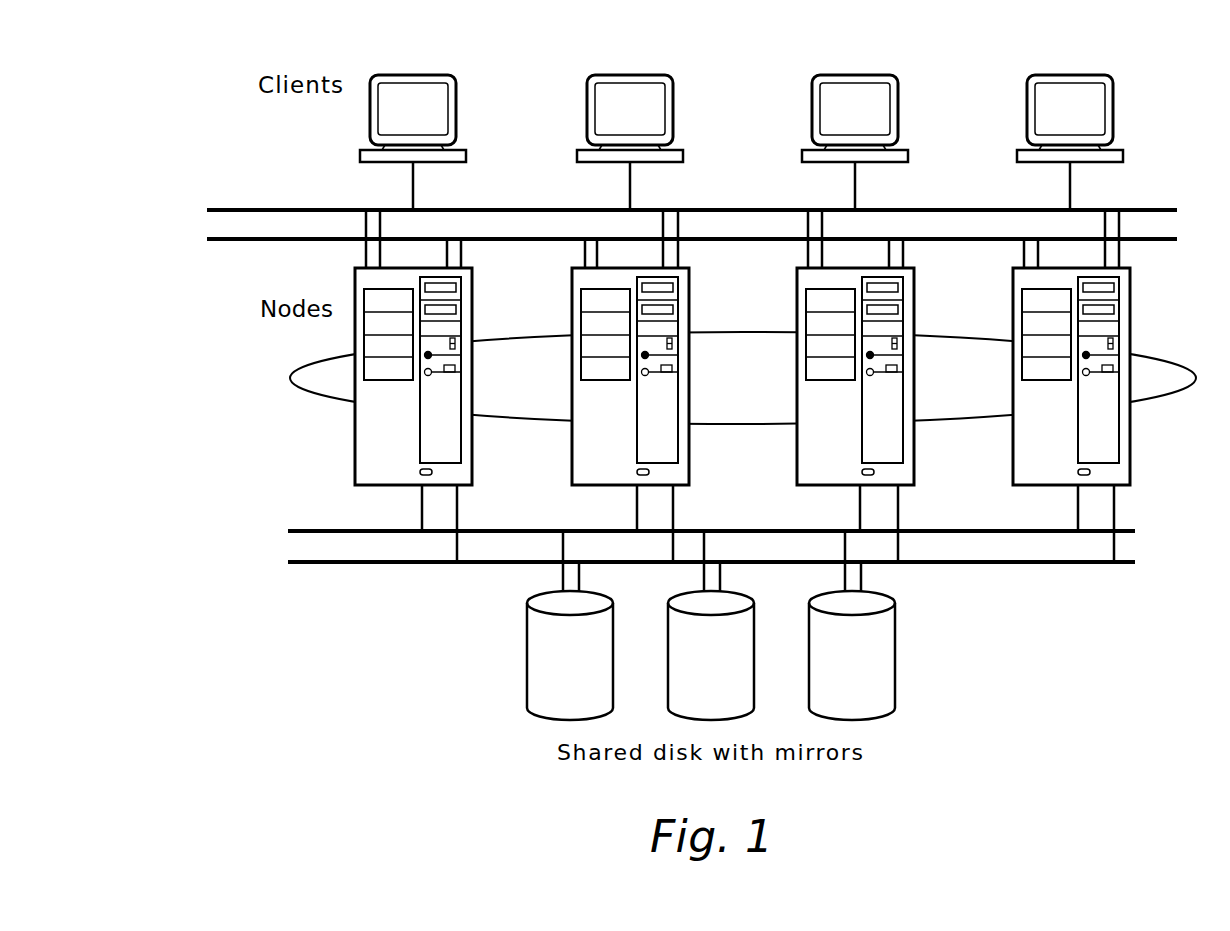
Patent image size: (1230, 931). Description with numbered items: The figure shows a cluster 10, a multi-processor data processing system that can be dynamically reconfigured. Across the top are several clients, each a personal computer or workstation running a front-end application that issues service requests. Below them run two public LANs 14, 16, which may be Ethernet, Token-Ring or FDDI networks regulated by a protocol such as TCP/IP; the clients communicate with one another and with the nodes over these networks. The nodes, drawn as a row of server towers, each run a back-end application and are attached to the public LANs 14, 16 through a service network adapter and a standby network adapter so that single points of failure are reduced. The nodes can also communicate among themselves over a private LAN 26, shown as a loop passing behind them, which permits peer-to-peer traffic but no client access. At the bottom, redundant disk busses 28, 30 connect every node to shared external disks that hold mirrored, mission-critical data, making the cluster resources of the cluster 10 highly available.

The cluster 10 is at (116, 142).
The public local area network 14 is at (494, 208).
The public local area network 16 is at (494, 242).
The private LAN 26 is at (950, 341).
The disk bus 28 is at (1008, 529).
The disk bus 30 is at (1008, 564).